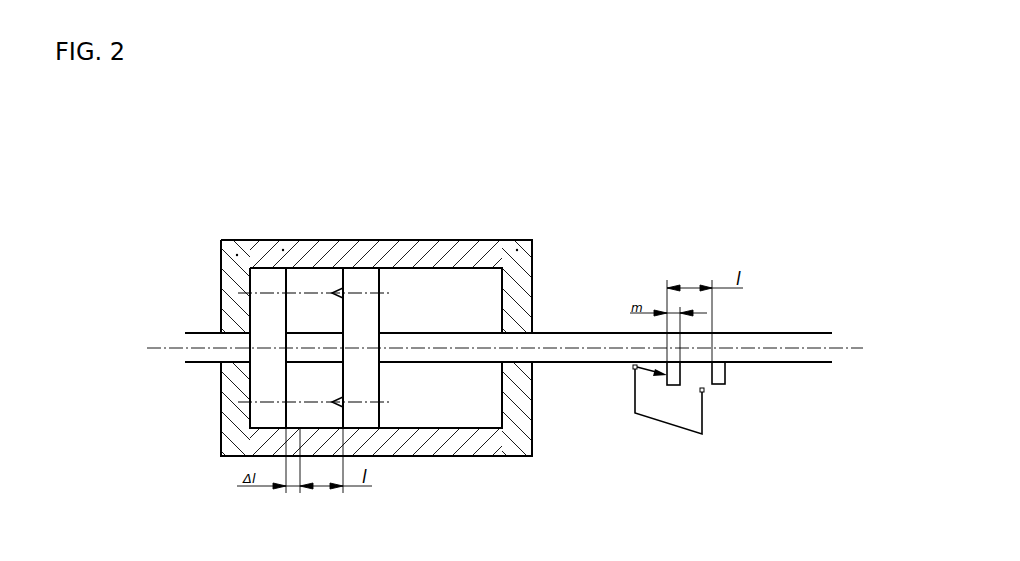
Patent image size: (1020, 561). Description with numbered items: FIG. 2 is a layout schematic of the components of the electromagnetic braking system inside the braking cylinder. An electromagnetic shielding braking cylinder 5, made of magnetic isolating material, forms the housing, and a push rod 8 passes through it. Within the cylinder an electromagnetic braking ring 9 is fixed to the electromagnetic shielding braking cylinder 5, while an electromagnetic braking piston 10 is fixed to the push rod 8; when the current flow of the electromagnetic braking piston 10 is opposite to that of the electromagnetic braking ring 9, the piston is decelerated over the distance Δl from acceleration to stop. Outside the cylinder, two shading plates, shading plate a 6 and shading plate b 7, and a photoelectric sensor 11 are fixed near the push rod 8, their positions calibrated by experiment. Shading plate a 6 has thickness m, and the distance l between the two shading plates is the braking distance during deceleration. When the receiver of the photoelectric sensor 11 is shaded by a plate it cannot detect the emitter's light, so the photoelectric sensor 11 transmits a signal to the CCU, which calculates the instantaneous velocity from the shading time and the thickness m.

The electromagnetic shielding braking cylinder 5 is at (410, 138).
The shading plate a 6 is at (675, 382).
The shading plate b 7 is at (718, 368).
The push rod 8 is at (207, 339).
The electromagnetic braking ring 9 is at (268, 410).
The electromagnetic braking piston 10 is at (362, 411).
The photoelectric sensor 11 is at (695, 437).